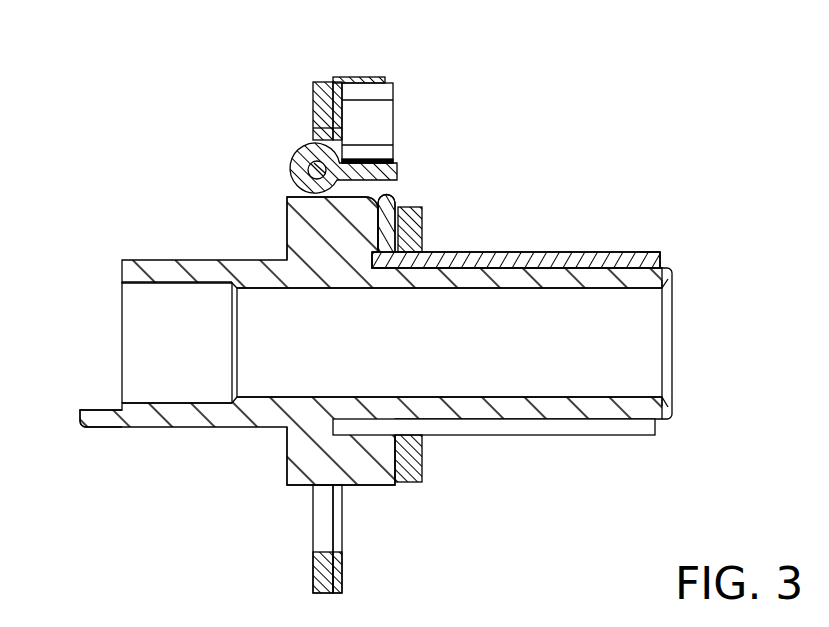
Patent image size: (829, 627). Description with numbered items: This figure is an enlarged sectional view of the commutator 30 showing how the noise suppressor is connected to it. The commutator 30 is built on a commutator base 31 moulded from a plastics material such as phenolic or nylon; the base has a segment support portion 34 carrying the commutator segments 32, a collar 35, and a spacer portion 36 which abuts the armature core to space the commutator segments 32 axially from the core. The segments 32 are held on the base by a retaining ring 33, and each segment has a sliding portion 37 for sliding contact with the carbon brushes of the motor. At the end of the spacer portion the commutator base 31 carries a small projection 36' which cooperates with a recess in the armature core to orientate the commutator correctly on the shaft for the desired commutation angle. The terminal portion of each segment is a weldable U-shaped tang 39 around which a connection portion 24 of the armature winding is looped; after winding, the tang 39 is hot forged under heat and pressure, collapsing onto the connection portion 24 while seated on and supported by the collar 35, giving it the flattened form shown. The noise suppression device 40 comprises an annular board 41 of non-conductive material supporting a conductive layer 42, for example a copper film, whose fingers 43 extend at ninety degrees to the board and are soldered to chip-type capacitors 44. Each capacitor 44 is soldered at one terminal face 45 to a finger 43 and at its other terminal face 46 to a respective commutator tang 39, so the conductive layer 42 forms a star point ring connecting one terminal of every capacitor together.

The connection portion 24 is at (302, 160).
The commutator 30 is at (674, 96).
The commutator base 31 is at (672, 330).
The commutator segments 32 is at (638, 252).
The retaining ring 33 is at (422, 227).
The segment support portion 34 is at (620, 368).
The collar 35 is at (287, 458).
The spacer portion 36 is at (128, 332).
The projection 36' is at (66, 379).
The sliding portion 37 is at (550, 252).
The tang 39 is at (383, 170).
The noise suppression device 40 is at (375, 311).
The annular board 41 is at (323, 103).
The conductive layer 42 is at (338, 75).
The fingers 43 is at (377, 75).
The chip-type capacitor 44 is at (375, 123).
The terminal face 45 is at (383, 92).
The terminal face 46 is at (382, 152).